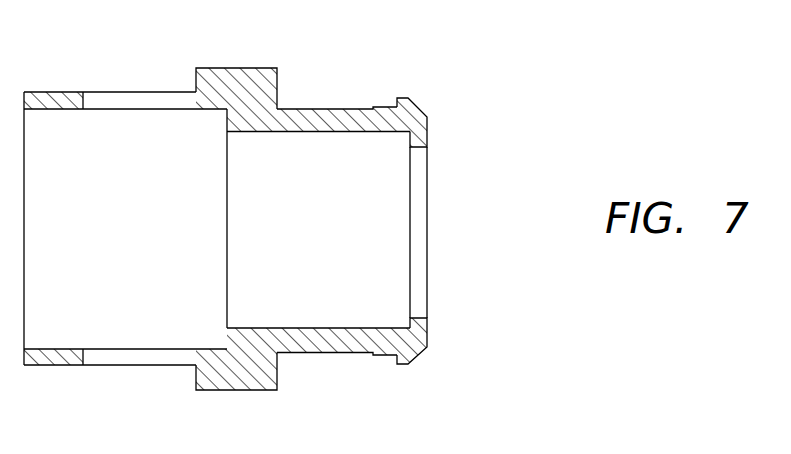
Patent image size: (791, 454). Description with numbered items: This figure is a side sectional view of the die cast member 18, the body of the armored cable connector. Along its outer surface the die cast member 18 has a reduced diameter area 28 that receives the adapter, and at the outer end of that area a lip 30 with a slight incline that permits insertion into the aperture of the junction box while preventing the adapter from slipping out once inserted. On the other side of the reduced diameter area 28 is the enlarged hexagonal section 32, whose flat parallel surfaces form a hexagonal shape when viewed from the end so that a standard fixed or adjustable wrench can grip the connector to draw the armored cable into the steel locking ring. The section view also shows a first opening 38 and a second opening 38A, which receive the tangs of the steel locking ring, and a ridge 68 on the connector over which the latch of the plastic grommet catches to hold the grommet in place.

The die cast member 18 is at (438, 134).
The reduced diameter area 28 is at (310, 108).
The lip 30 is at (405, 97).
The enlarged hexagonal section 32 is at (252, 68).
The first opening 38 is at (148, 91).
The second opening 38A is at (143, 366).
The ridge 68 is at (410, 318).